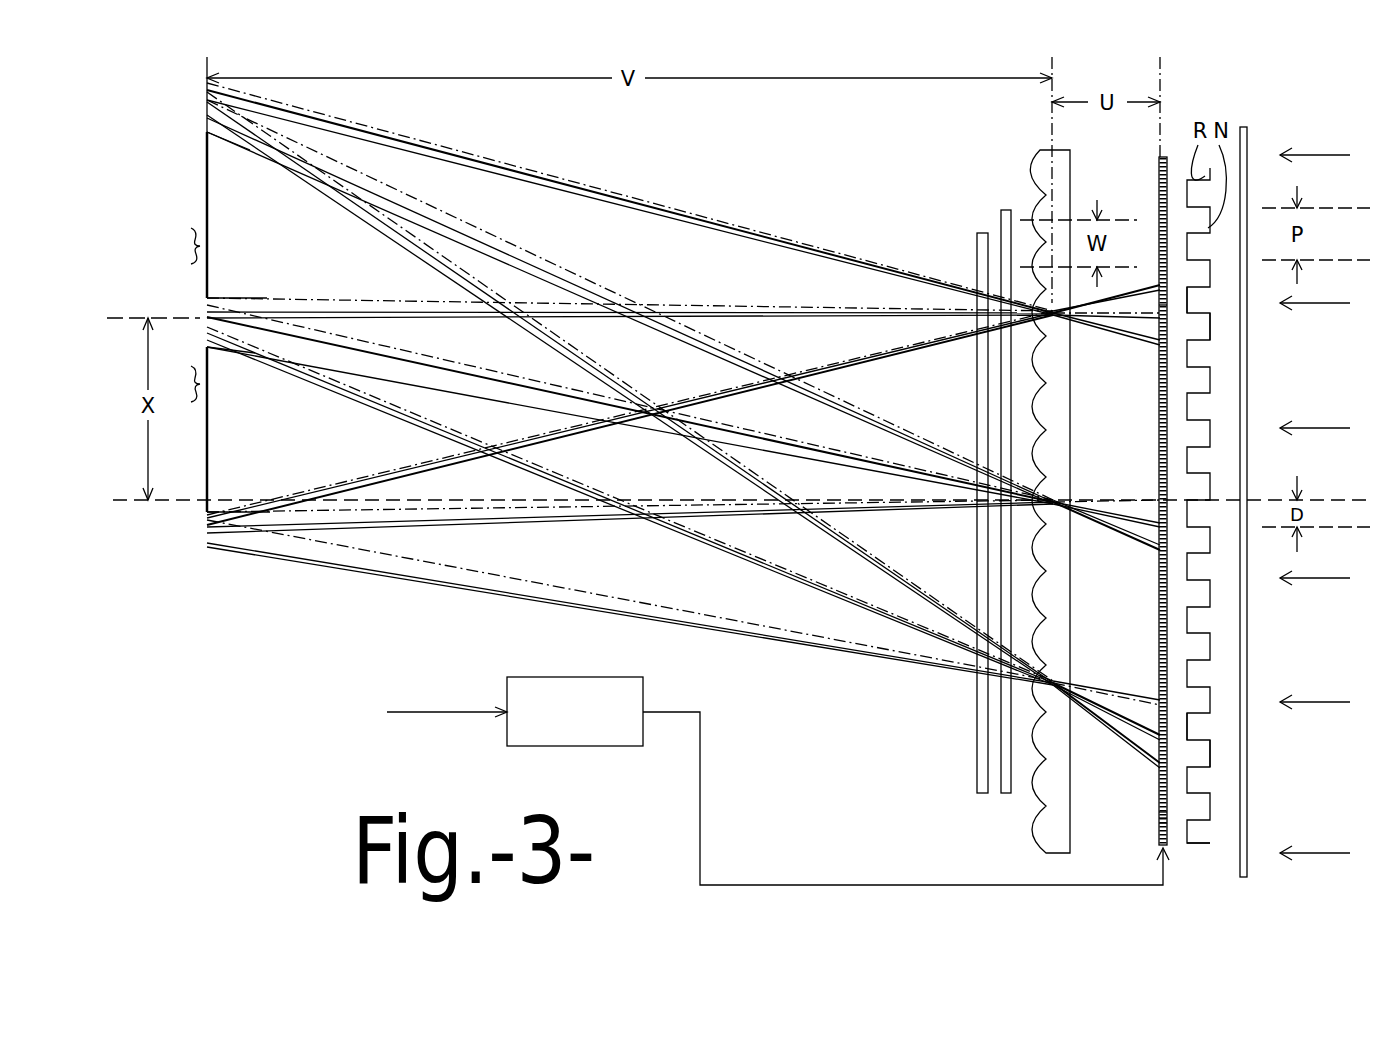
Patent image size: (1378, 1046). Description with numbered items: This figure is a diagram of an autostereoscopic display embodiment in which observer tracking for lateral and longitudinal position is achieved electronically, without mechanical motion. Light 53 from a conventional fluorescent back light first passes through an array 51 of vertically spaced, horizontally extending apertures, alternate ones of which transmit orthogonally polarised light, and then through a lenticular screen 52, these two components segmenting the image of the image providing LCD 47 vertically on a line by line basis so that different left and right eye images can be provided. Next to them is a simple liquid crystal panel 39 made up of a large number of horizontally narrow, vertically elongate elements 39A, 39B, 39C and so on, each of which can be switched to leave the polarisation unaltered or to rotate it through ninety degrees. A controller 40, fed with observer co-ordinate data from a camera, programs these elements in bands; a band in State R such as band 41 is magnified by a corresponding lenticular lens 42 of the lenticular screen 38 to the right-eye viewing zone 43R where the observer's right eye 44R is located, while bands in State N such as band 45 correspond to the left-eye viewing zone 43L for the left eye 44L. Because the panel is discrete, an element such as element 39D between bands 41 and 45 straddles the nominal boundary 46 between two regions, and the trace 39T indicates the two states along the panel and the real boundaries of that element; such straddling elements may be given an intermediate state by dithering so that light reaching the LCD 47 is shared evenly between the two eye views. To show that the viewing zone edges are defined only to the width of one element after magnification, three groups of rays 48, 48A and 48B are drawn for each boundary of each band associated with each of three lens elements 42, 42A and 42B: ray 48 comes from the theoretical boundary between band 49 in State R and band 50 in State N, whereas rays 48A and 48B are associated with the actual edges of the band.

The lenticular screen 38 is at (1060, 855).
The liquid crystal panel 39 is at (1163, 157).
The element of liquid crystal panel 39A is at (1162, 813).
The element of liquid crystal panel 39B is at (1161, 818).
The element of liquid crystal panel 39C is at (1160, 824).
The element straddling a nominal boundary 39D is at (1160, 322).
The trace 39T is at (1198, 845).
The controller 40 is at (685, 781).
The band in State R 41 is at (1189, 298).
The lenticular lens 42 is at (1042, 325).
The lens element 42A is at (1037, 508).
The lens element 42B is at (1040, 682).
The left-eye viewing zone 43L is at (208, 200).
The right-eye viewing zone 43R is at (209, 442).
The observer's left eye 44L is at (190, 245).
The observer's right eye 44R is at (190, 400).
The band in State N 45 is at (1211, 327).
The nominal boundary 46 is at (1200, 372).
The image providing LCD 47 is at (981, 770).
The ray 48 is at (356, 386).
The ray 48A is at (455, 428).
The ray 48B is at (402, 413).
The band in State R 49 is at (1188, 724).
The band in State N 50 is at (1211, 752).
The array 51 is at (1244, 127).
The lenticular screen 52 is at (1006, 800).
The light 53 is at (1309, 153).